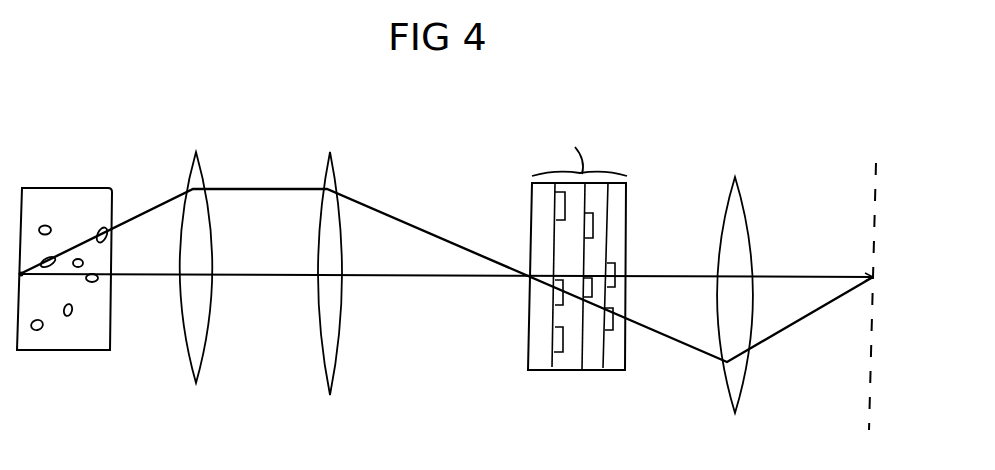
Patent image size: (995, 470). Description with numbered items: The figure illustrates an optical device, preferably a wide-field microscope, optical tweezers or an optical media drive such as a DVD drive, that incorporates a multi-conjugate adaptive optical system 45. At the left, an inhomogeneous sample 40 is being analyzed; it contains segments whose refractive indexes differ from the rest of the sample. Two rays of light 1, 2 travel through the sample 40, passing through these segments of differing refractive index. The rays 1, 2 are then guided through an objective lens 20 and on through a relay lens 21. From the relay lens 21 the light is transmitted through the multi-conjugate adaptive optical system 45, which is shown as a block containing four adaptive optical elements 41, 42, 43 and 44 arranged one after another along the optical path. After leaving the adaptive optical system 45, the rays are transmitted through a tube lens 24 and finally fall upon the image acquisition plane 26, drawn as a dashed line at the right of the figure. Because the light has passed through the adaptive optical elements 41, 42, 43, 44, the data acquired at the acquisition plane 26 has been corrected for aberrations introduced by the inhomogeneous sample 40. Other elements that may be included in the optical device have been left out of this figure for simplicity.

The ray of light 1 is at (158, 199).
The ray of light 2 is at (158, 283).
The objective lens 20 is at (218, 360).
The relay lens 21 is at (350, 373).
The tube lens 24 is at (755, 187).
The image acquisition plane 26 is at (885, 203).
The inhomogeneous sample 40 is at (80, 357).
The adaptive optical element 41 is at (541, 376).
The adaptive optical element 42 is at (571, 376).
The adaptive optical element 43 is at (592, 376).
The adaptive optical element 44 is at (617, 376).
The multi-conjugate adaptive optical system 45 is at (585, 268).